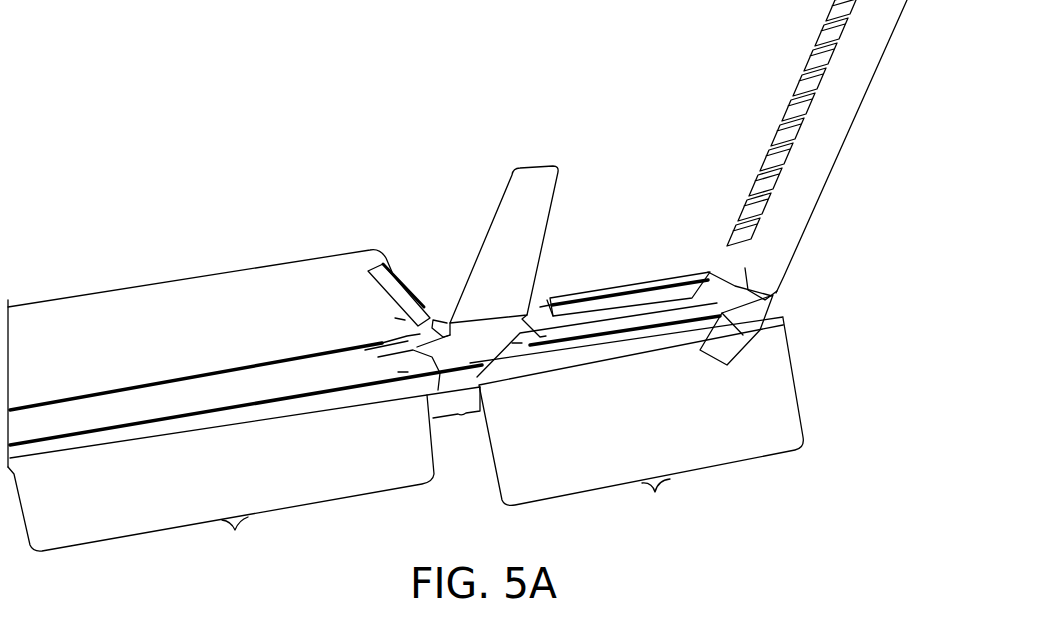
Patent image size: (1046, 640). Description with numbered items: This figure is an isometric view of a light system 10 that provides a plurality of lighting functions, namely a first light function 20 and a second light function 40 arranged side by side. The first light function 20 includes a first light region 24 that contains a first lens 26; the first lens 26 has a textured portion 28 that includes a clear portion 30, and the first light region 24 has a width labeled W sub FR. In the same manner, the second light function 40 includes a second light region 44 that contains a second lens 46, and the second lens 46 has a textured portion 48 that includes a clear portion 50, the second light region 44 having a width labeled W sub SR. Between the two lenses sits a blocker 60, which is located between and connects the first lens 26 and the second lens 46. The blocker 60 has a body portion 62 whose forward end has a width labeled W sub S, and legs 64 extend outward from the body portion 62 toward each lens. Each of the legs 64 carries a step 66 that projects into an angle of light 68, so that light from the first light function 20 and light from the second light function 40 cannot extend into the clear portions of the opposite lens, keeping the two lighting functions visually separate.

The light system 10 is at (190, 107).
The first light function 20 is at (655, 160).
The first light region 24 is at (645, 392).
The first lens 26 is at (722, 275).
The textured portion 28 is at (592, 353).
The clear portion 30 is at (738, 358).
The second light function 40 is at (119, 243).
The second light region 44 is at (145, 456).
The second lens 46 is at (75, 343).
The textured portion 48 is at (401, 285).
The clear portion 50 is at (317, 258).
The blocker 60 is at (510, 145).
The body portion 62 is at (540, 228).
The legs 64 is at (436, 321).
The step 66 is at (403, 388).
The angle of light 68 is at (398, 302).